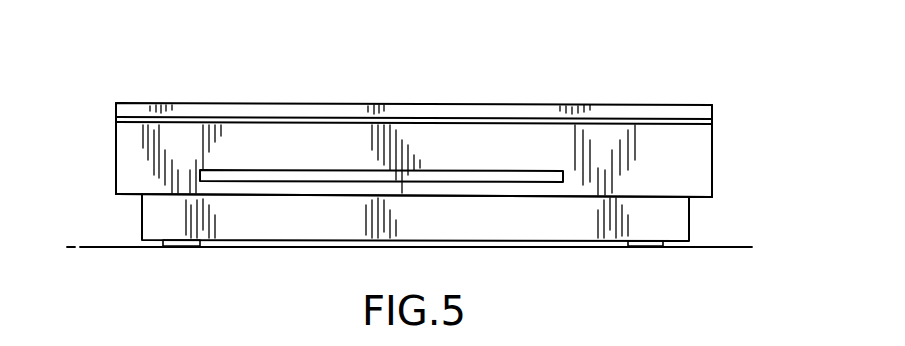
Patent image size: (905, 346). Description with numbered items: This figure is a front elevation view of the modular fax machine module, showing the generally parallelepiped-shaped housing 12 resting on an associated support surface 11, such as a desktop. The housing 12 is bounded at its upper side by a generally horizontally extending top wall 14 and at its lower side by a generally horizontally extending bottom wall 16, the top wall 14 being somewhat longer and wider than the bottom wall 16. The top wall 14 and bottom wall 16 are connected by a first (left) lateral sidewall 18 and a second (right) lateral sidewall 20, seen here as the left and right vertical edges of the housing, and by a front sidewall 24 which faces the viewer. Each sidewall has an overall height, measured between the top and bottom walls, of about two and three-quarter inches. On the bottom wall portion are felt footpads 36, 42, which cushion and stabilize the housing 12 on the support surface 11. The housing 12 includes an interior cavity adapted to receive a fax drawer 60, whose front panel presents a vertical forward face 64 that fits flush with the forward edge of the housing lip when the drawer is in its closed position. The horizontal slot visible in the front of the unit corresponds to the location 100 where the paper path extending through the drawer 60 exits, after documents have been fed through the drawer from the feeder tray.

The support surface 11 is at (102, 247).
The housing 12 is at (591, 103).
The top wall 14 is at (348, 105).
The bottom wall 16 is at (510, 245).
The first lateral sidewall 18 is at (116, 136).
The second lateral sidewall 20 is at (712, 165).
The front sidewall 24 is at (677, 225).
The felt footpad 36 is at (642, 249).
The felt footpad 42 is at (180, 248).
The fax drawer 60 is at (673, 153).
The vertical forward face 64 is at (702, 190).
The paper path exit 100 is at (275, 177).